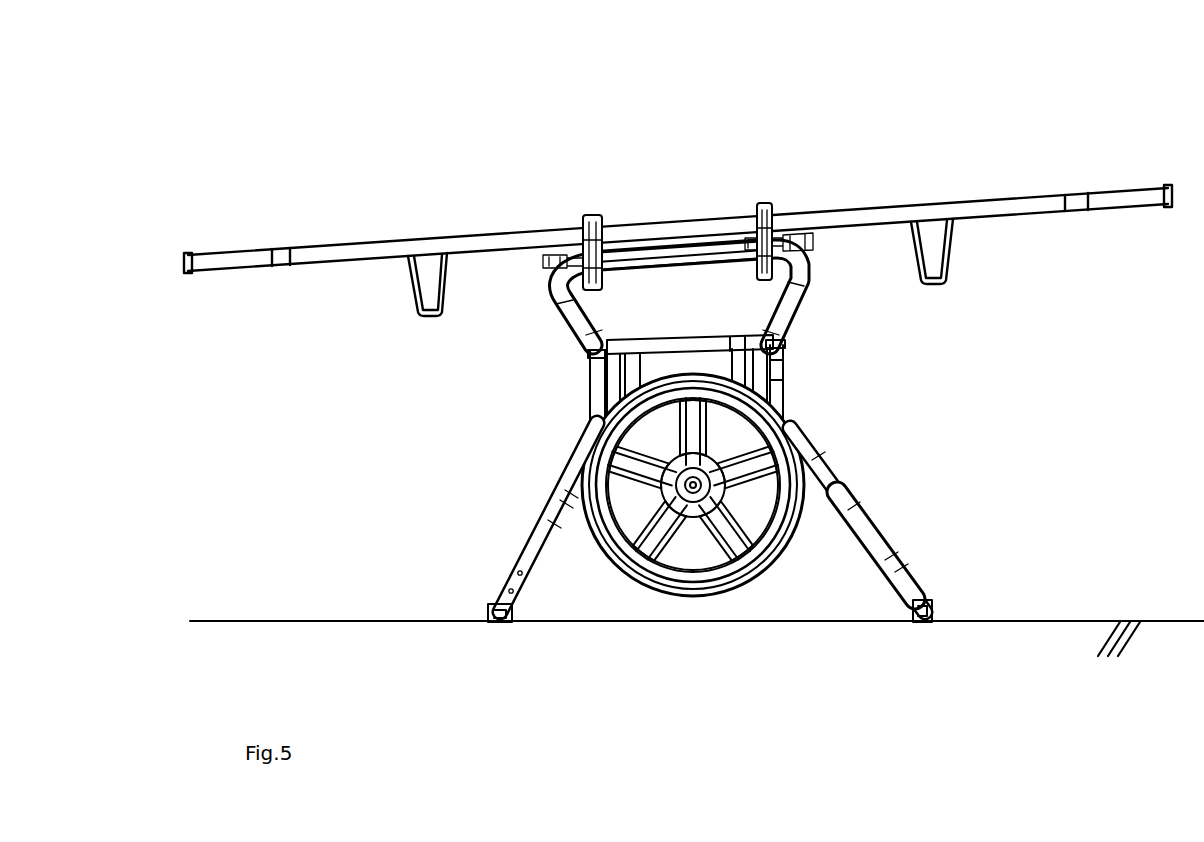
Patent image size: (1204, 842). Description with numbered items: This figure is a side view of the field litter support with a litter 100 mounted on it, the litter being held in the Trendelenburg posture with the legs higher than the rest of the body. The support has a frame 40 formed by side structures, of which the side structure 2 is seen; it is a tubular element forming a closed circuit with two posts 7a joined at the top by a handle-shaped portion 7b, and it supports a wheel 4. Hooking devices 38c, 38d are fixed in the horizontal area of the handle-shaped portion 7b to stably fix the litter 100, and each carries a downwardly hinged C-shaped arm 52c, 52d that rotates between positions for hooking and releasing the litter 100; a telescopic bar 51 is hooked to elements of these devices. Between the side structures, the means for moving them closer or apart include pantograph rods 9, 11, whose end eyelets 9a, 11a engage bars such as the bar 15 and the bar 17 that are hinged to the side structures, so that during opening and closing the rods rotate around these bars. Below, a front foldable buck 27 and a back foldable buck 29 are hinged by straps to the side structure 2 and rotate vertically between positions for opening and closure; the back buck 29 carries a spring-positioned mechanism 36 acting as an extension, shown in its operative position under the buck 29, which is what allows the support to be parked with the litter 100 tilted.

The litter 100 is at (383, 253).
The connecting device 38d is at (586, 206).
The connecting device 38c is at (772, 196).
The C-shaped arm 52d is at (572, 222).
The C-shaped arm 52c is at (758, 238).
The handle-shaped portion 7b is at (700, 255).
The telescopic bar 51 is at (812, 240).
The post 7a is at (776, 368).
The bar 15 is at (683, 343).
The eyelet 11a is at (781, 341).
The eyelet 9a is at (590, 350).
The rod 9 is at (600, 395).
The rod 11 is at (775, 388).
The frame 40 is at (803, 395).
The side structure 2 is at (678, 368).
The front foldable buck 27 is at (505, 557).
The back foldable buck 29 is at (931, 525).
The mechanism 36 is at (935, 610).
The wheel 4 is at (697, 558).
The bar 17 is at (740, 495).